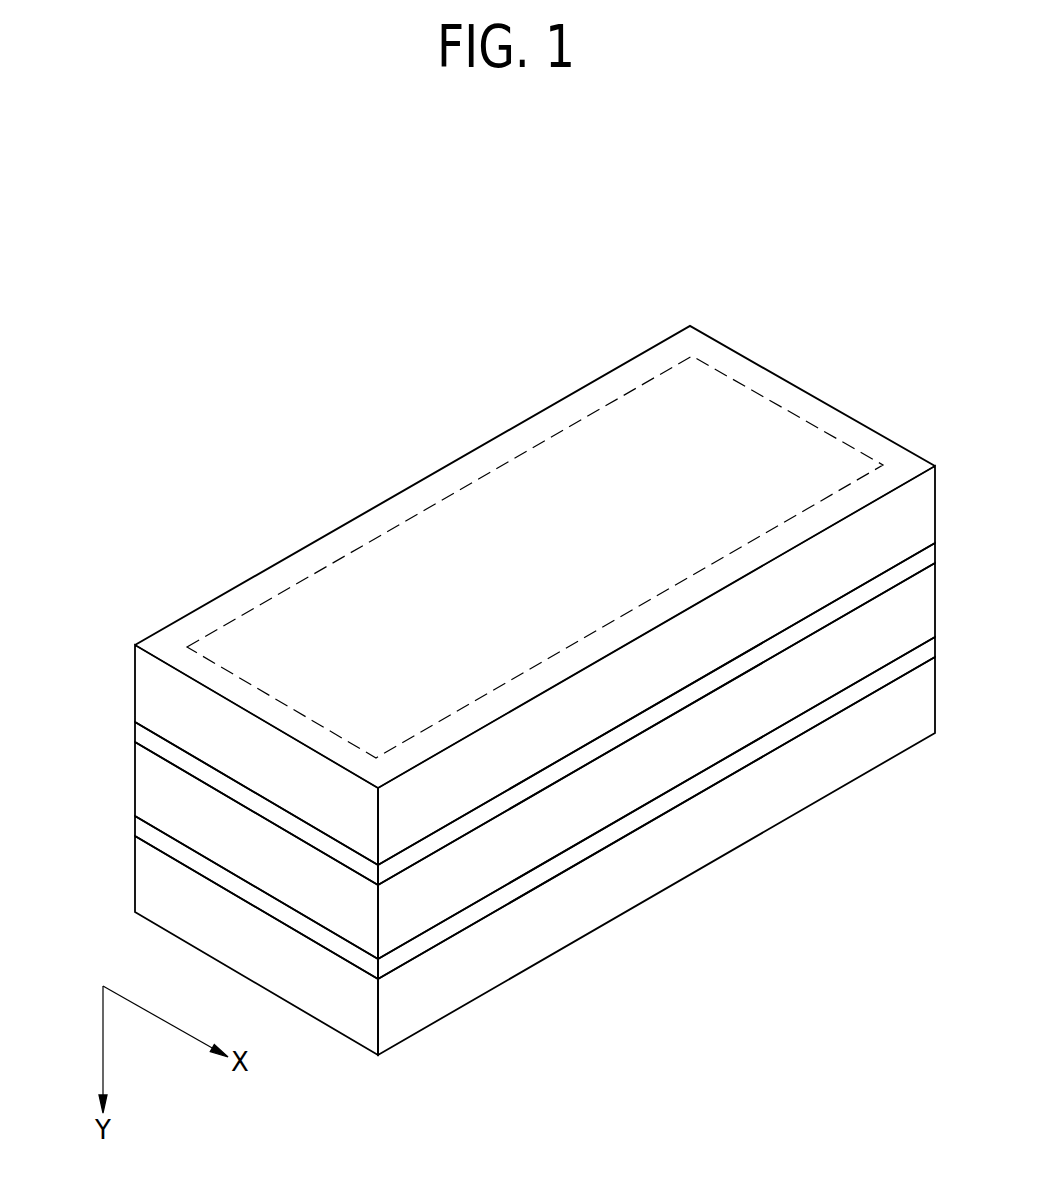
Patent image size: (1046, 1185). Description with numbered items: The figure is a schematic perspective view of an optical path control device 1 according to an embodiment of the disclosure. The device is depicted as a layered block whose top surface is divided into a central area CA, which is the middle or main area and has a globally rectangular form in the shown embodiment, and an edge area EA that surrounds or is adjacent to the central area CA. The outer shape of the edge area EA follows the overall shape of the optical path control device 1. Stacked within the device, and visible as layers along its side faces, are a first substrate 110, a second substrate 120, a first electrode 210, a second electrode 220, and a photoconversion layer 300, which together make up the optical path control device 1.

The optical path control device 1 is at (281, 495).
The first substrate 110 is at (160, 877).
The second substrate 120 is at (160, 692).
The first electrode 210 is at (160, 837).
The second electrode 220 is at (160, 743).
The photoconversion layer 300 is at (160, 795).
The central area CA is at (597, 443).
The edge area EA is at (585, 407).